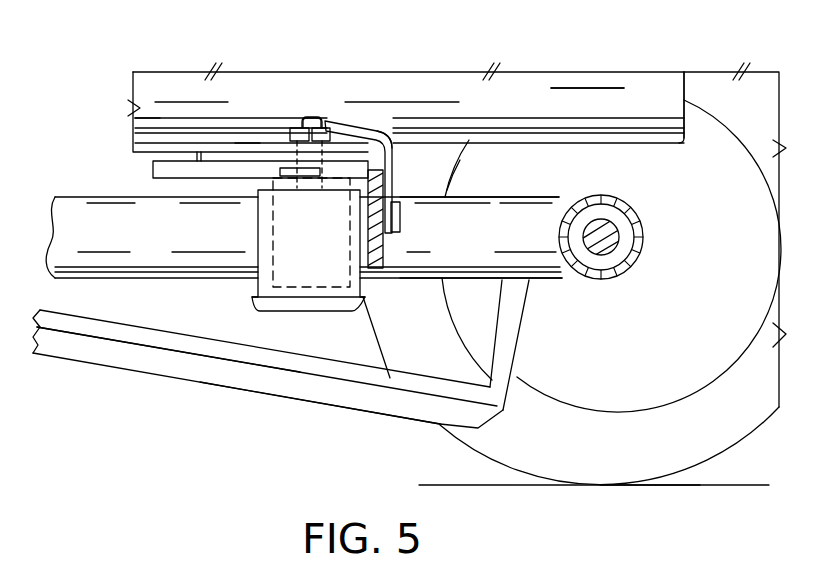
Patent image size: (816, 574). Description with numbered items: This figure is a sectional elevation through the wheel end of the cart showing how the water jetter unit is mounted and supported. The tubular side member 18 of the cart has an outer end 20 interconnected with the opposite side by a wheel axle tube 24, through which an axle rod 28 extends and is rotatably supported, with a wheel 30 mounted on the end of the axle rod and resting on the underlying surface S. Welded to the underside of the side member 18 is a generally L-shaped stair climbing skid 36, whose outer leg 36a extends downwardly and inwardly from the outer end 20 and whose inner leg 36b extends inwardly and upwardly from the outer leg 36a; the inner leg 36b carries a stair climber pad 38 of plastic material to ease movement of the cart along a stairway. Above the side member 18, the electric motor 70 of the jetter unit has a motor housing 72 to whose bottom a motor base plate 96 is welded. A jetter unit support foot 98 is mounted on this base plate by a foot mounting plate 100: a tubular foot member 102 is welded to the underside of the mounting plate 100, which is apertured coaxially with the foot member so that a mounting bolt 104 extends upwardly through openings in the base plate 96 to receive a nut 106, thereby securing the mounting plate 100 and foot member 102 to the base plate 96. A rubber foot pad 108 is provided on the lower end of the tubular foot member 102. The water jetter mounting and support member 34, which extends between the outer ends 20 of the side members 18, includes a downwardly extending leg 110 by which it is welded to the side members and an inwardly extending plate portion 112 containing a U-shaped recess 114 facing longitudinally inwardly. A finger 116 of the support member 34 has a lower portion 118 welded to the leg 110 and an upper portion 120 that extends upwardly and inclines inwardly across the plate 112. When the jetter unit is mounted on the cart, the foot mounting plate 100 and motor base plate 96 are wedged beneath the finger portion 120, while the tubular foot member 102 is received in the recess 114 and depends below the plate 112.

The tubular side members 18 is at (76, 189).
The outer ends 20 is at (540, 265).
The wheel axle tube 24 is at (635, 214).
The axle rod 28 is at (617, 246).
The wheels 30 is at (684, 460).
The water jetter mounting and support member 34 is at (382, 273).
The stair climbing skid 36 is at (146, 381).
The outer leg 36a is at (509, 341).
The inner leg 36b is at (222, 355).
The stair climber pad 38 is at (290, 394).
The electric motor 70 is at (131, 79).
The motor housing 72 is at (500, 88).
The motor base plate 96 is at (158, 143).
The jetter unit support feet 98 is at (331, 324).
The foot mounting plate 100 is at (244, 160).
The tubular foot member 102 is at (262, 200).
The mounting bolts 104 is at (314, 122).
The nuts 106 is at (297, 126).
The rubber foot pads 108 is at (257, 300).
The downwardly extending leg 110 is at (401, 224).
The plate portion 112 is at (156, 182).
The U-shaped recesses 114 is at (330, 184).
The fingers 116 is at (381, 124).
The lower portion 118 is at (457, 191).
The upper portion 120 is at (351, 126).
The underlying surface S is at (733, 483).